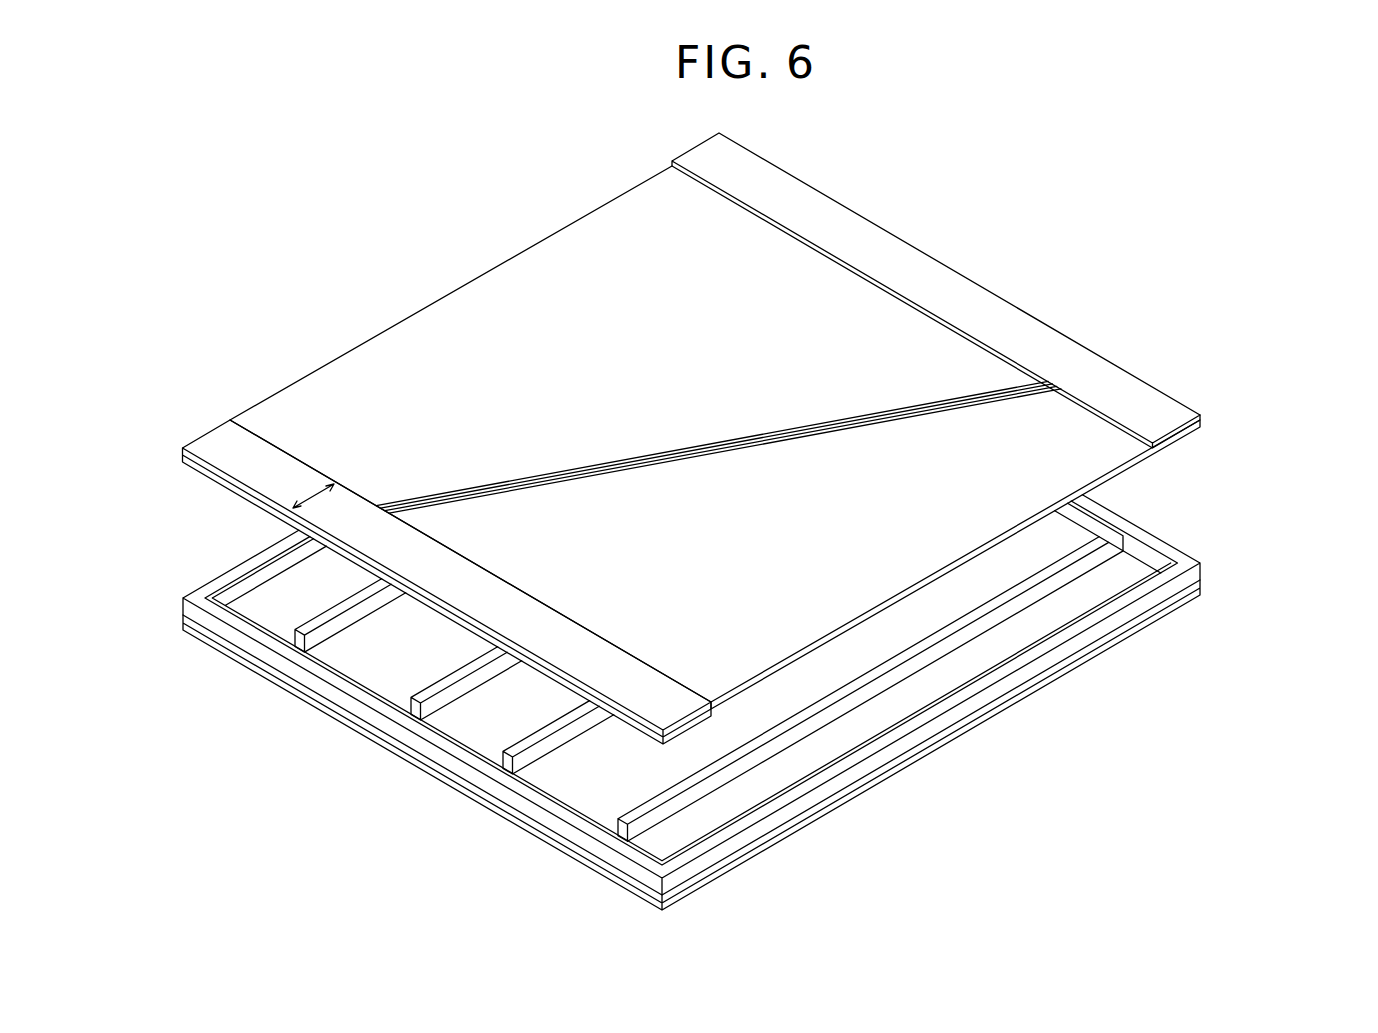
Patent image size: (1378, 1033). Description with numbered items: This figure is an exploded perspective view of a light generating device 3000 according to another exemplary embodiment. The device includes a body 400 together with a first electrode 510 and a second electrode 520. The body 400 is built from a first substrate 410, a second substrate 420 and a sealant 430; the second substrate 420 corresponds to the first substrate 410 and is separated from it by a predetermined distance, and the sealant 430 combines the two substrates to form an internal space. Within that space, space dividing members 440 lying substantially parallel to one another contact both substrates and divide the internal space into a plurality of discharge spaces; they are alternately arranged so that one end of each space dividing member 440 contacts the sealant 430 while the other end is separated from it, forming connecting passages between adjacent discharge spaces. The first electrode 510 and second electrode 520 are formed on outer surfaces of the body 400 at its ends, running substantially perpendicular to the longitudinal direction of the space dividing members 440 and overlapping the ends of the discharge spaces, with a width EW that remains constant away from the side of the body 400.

The light generating device 3000 is at (742, 127).
The body 400 is at (1300, 602).
The first substrate 410 is at (1203, 590).
The second substrate 420 is at (1203, 421).
The sealant 430 is at (1163, 540).
The space dividing member 440 is at (781, 742).
The first electrode 510 is at (210, 432).
The second electrode 520 is at (672, 161).